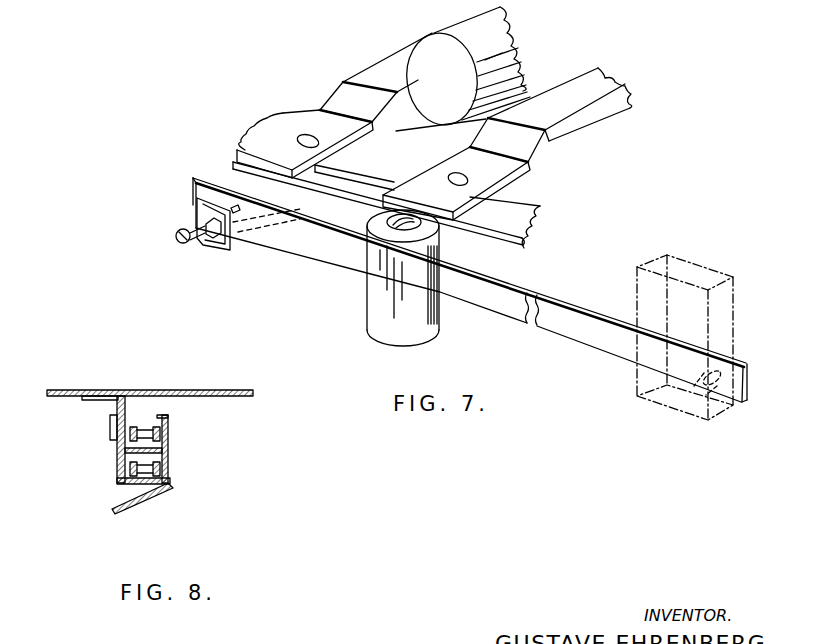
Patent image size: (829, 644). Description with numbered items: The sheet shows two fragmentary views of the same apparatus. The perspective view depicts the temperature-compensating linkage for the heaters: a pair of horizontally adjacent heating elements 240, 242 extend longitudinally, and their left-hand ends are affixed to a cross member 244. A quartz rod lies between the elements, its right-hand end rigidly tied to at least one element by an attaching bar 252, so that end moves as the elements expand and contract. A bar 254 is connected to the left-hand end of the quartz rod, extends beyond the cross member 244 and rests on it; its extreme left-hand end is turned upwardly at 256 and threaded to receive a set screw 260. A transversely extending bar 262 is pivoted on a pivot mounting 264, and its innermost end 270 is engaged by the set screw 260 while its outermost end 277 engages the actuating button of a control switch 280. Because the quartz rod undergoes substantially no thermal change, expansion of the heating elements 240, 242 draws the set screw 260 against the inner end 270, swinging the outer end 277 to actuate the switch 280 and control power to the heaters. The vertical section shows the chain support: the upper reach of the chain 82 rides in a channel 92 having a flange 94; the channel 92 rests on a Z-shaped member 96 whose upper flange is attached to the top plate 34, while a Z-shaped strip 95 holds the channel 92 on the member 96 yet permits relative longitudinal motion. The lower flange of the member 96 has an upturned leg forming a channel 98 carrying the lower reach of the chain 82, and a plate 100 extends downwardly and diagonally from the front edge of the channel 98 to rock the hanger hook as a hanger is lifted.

In FIG. 8, the top plate 34 is at (172, 388).
In FIG. 8, the chain 82 is at (160, 438).
In FIG. 8, the channel 92 is at (168, 431).
In FIG. 8, the flange 94 is at (160, 412).
In FIG. 8, the Z-shaped strip 95 is at (110, 422).
In FIG. 8, the Z-shaped member 96 is at (112, 435).
In FIG. 8, the channel 98 is at (120, 485).
In FIG. 8, the plate 100 is at (147, 505).
In FIG. 7, the heating element 240 is at (596, 82).
In FIG. 7, the heating element 242 is at (366, 70).
In FIG. 7, the cross member 244 is at (550, 200).
In FIG. 7, the attaching bar 252 is at (514, 36).
In FIG. 7, the bar 254 is at (368, 181).
In FIG. 7, the upturned end 256 is at (198, 212).
In FIG. 7, the set screw 260 is at (176, 236).
In FIG. 7, the bar 262 is at (333, 248).
In FIG. 7, the pivot mounting 264 is at (373, 294).
In FIG. 7, the innermost end 270 is at (207, 182).
In FIG. 7, the outermost end 277 is at (747, 365).
In FIG. 7, the control switch 280 is at (648, 290).